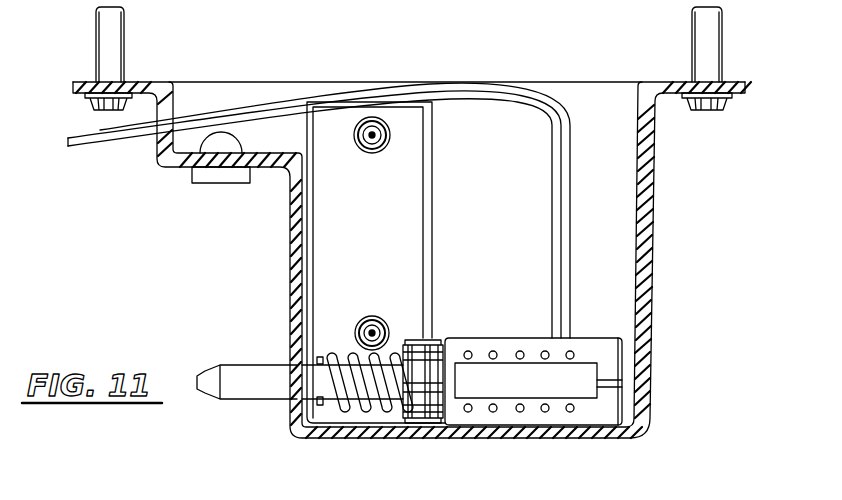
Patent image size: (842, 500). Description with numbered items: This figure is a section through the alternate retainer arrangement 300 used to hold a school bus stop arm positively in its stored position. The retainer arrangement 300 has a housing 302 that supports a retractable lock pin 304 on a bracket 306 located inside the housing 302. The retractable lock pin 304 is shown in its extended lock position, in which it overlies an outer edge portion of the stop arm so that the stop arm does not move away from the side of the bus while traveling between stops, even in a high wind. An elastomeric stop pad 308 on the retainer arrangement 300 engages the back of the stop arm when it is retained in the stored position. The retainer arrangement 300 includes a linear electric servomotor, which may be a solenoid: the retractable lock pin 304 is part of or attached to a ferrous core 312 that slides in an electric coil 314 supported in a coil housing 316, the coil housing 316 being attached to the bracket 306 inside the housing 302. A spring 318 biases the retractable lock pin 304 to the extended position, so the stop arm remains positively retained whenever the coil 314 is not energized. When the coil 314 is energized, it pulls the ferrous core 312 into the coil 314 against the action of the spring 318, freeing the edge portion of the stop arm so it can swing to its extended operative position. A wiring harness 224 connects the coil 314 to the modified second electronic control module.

The wiring harness 224 is at (117, 143).
The retainer arrangement 300 is at (652, 222).
The housing 302 is at (650, 277).
The retractable lock pin 304 is at (230, 397).
The bracket 306 is at (432, 252).
The elastomeric stop pad 308 is at (229, 183).
The ferrous core 312 is at (350, 390).
The electric coil 314 is at (520, 412).
The coil housing 316 is at (605, 415).
The spring 318 is at (325, 356).